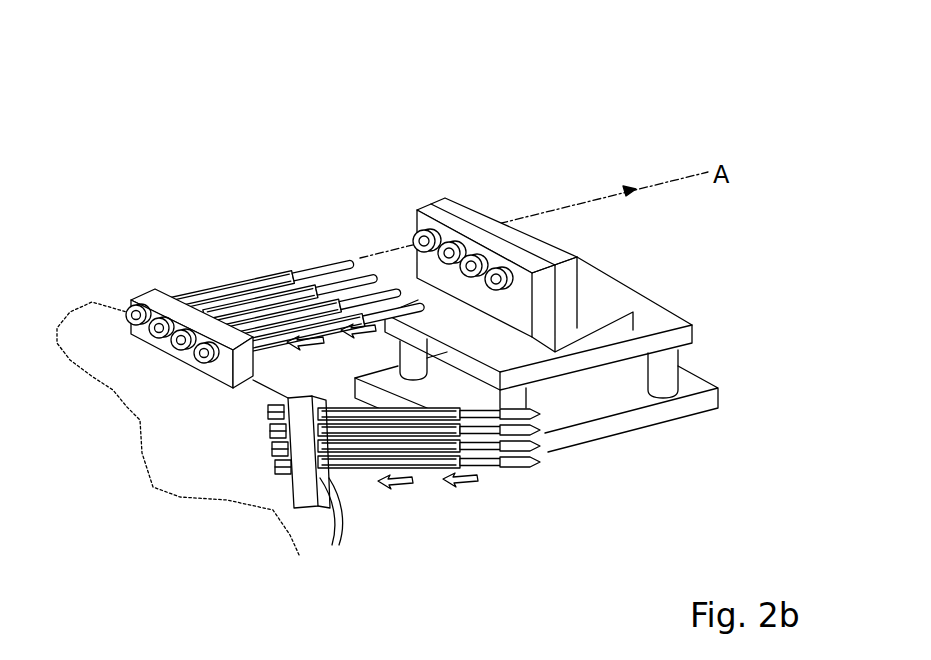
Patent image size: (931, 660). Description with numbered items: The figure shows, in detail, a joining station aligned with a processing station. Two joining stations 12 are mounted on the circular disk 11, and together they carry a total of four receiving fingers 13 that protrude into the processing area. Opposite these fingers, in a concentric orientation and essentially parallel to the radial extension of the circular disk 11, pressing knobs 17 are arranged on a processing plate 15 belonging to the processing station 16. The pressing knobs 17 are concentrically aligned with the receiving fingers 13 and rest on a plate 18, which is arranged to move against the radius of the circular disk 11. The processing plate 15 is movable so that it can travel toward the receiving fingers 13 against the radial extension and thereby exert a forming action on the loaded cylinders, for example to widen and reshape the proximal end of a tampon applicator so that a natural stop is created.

The circular disk 11 is at (113, 327).
The joining station 12 is at (150, 300).
The receiving fingers 13 is at (262, 270).
The processing plate 15 is at (483, 237).
The processing station 16 is at (532, 150).
The pressing knobs 17 is at (433, 207).
The plate 18 is at (700, 382).